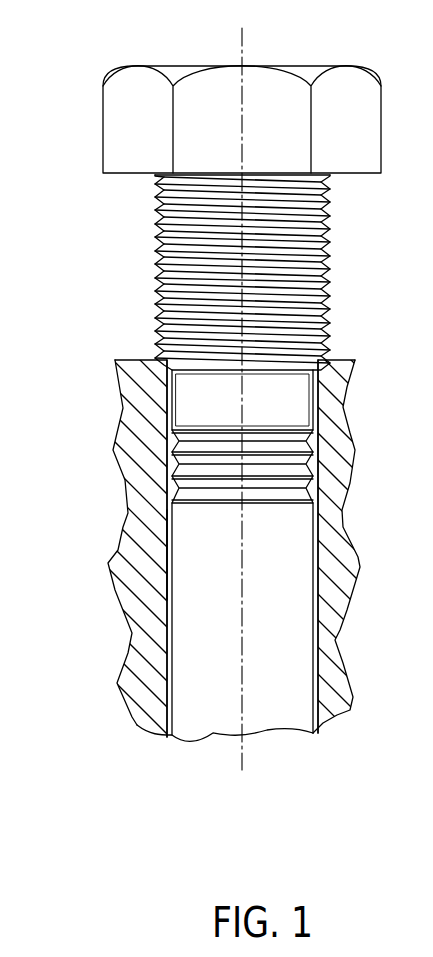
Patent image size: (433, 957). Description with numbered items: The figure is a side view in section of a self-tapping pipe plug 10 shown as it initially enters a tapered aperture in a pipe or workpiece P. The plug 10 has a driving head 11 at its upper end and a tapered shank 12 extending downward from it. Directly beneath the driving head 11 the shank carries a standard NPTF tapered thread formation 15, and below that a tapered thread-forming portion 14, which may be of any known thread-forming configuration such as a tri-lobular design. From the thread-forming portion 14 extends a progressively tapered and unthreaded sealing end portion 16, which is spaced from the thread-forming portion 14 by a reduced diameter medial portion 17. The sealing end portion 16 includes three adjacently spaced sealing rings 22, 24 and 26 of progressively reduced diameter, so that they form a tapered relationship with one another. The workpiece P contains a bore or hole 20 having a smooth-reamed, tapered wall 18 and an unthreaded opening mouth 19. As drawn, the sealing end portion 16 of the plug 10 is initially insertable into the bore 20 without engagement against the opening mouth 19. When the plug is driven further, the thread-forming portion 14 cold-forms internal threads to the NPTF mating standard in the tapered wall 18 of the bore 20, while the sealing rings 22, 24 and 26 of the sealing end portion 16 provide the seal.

The pipe plug 10 is at (219, 90).
The driving head 11 is at (348, 96).
The tapered shank 12 is at (178, 272).
The thread-forming portion 14 is at (152, 269).
The NPTF tapered thread formation 15 is at (155, 218).
The sealing end portion 16 is at (228, 396).
The reduced diameter medial portion 17 is at (281, 403).
The tapered wall 18 is at (170, 550).
The opening mouth 19 is at (166, 483).
The bore 20 is at (199, 663).
The first sealing ring 22 is at (316, 437).
The second sealing ring 24 is at (313, 465).
The third sealing ring 26 is at (313, 492).
The workpiece P is at (120, 604).